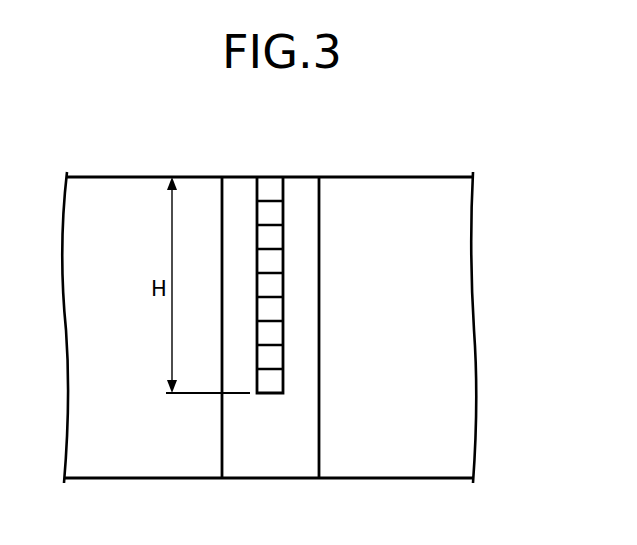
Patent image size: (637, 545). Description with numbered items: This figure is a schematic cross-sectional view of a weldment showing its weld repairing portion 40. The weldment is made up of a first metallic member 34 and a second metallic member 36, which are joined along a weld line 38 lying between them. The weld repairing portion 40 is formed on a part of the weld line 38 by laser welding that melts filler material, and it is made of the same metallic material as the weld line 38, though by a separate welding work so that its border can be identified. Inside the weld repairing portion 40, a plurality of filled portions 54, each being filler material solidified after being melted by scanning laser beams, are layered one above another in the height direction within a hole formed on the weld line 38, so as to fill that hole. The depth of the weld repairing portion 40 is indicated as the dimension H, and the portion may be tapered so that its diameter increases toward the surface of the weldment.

The first metallic member 34 is at (118, 190).
The second metallic member 36 is at (376, 190).
The weld line 38 is at (238, 190).
The weld repairing portion 40 is at (270, 176).
The filled portions 54 is at (272, 336).